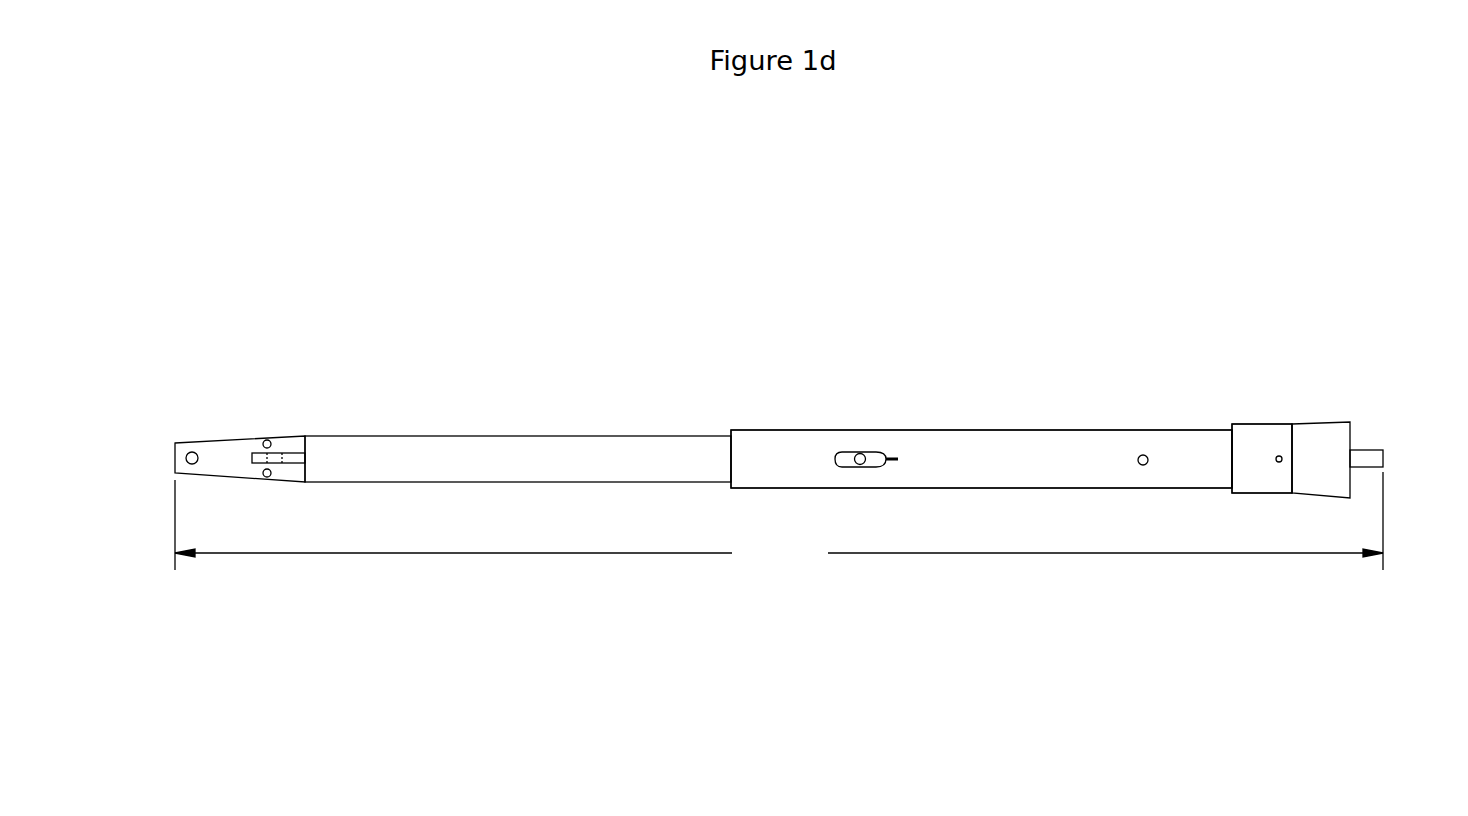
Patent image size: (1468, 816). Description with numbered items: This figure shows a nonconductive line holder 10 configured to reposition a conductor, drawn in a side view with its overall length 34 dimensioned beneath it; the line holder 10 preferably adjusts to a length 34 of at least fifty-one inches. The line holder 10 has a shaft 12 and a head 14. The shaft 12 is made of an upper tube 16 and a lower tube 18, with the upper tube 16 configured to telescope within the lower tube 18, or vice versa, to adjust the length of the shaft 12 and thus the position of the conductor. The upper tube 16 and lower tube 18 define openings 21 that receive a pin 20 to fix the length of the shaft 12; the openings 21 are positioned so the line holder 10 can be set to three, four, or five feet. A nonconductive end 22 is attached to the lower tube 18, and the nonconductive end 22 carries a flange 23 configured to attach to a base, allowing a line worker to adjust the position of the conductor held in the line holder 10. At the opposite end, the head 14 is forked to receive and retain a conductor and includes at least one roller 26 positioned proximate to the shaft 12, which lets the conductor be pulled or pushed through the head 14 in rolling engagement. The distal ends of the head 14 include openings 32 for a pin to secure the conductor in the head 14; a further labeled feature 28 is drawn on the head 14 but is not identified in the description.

The nonconductive line holder 10 is at (1058, 237).
The shaft 12 is at (781, 369).
The head 14 is at (222, 466).
The upper tube 16 is at (454, 452).
The lower tube 18 is at (1018, 443).
The pin 20 is at (867, 453).
The openings 21 is at (1146, 455).
The nonconductive end 22 is at (1312, 442).
The flange 23 is at (1365, 457).
The roller 26 is at (266, 478).
The upper hole 28 is at (268, 440).
The openings 32 is at (192, 452).
The length 34 is at (975, 553).